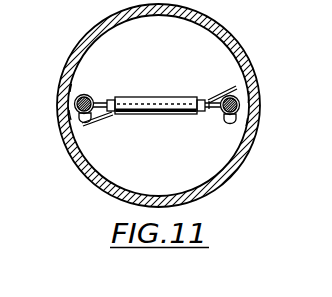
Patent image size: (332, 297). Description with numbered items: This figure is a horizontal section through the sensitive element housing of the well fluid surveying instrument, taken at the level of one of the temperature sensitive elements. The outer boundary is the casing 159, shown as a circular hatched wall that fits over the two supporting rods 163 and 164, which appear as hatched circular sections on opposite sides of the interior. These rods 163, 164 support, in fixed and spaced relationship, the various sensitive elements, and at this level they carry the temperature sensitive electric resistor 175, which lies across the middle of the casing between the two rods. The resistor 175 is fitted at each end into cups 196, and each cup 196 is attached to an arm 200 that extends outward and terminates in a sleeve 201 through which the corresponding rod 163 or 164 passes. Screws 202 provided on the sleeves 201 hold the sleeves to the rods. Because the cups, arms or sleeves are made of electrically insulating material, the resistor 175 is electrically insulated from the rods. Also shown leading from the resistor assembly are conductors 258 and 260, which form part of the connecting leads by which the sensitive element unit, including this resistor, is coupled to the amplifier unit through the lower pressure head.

The casing 159 is at (238, 34).
The rod 164 is at (252, 88).
The sleeves 201 is at (74, 98).
The rod 163 is at (75, 113).
The temperature sensitive electric resistor 175 is at (165, 97).
The cups 196 is at (113, 99).
The arms 200 is at (93, 96).
The screws 202 is at (84, 120).
The conductor 258 is at (116, 119).
The conductor 260 is at (222, 94).